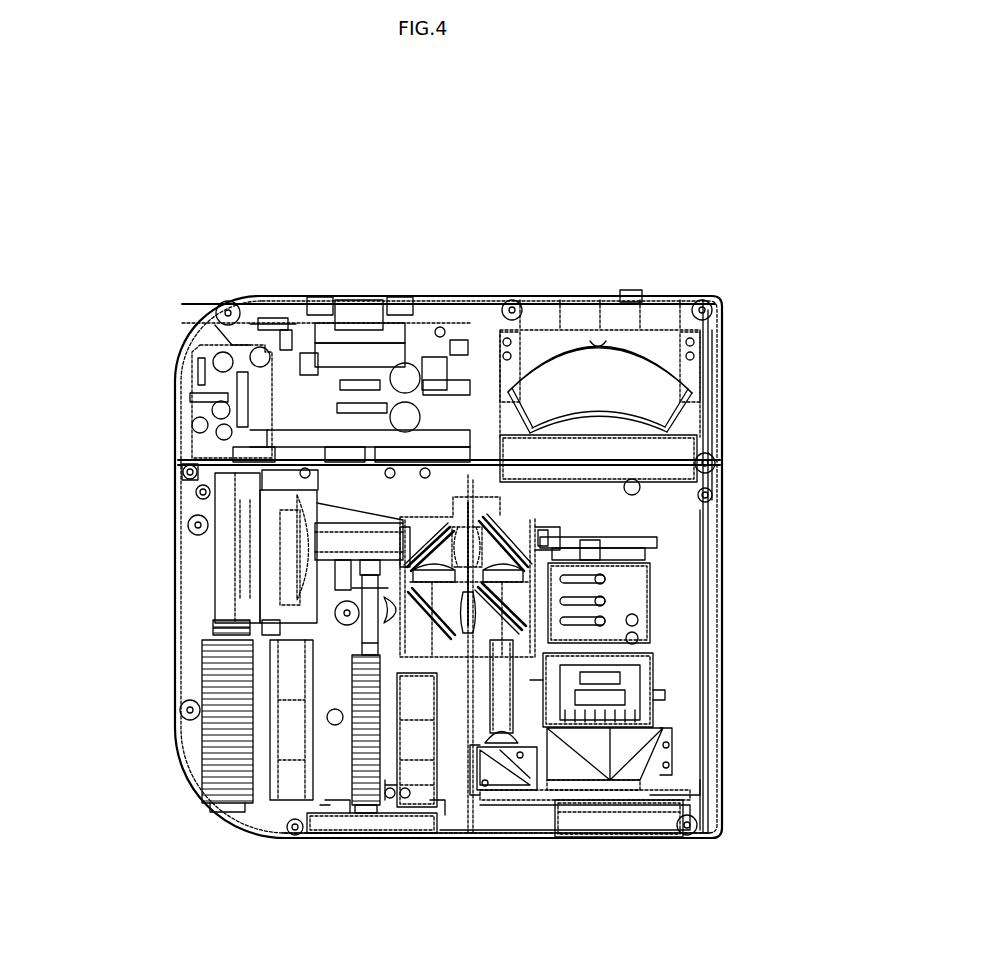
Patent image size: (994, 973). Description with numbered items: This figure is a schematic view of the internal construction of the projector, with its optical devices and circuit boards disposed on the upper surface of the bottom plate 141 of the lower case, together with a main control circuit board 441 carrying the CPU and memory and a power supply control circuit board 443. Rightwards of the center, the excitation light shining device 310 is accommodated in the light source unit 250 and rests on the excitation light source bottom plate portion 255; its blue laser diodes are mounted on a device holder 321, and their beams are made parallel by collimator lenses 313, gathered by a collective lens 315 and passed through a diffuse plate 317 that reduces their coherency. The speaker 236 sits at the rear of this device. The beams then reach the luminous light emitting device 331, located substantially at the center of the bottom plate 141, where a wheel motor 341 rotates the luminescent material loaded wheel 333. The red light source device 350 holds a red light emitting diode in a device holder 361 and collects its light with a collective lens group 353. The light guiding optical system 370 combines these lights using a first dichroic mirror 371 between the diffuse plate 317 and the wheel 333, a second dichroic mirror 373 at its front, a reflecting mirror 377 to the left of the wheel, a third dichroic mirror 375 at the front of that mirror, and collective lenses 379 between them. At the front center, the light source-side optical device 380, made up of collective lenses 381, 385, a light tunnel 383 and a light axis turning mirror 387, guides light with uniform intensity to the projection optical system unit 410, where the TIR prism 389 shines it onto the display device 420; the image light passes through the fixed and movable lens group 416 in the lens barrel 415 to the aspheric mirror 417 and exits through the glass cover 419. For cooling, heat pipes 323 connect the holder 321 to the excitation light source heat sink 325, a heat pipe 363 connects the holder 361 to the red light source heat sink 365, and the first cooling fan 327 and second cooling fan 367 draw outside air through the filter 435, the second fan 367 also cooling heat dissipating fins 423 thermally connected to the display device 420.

The bottom plate 141 is at (195, 580).
The speaker 236 is at (372, 360).
The light source unit 250 is at (280, 325).
The excitation light source bottom plate portion 255 is at (307, 522).
The excitation light shining device 310 is at (199, 380).
The collimator lenses 313 is at (250, 540).
The collective lens 315 is at (195, 453).
The diffuse plate 317 is at (327, 325).
The device holder 321 is at (241, 543).
The heat pipes 323 is at (213, 613).
The excitation light source heat sink 325 is at (287, 668).
The first cooling fan 327 is at (250, 678).
The luminous light emitting device 331 is at (648, 241).
The luminescent material loaded wheel 333 is at (478, 415).
The wheel motor 341 is at (500, 510).
The red light source device 350 is at (135, 836).
The collective lens group 353 is at (375, 612).
The device holder 361 is at (362, 582).
The heat pipe 363 is at (357, 598).
The red light source heat sink 365 is at (380, 625).
The second cooling fan 367 is at (415, 765).
The light guiding optical system 370 is at (561, 582).
The first dichroic mirror 371 is at (432, 540).
The second dichroic mirror 373 is at (433, 622).
The third dichroic mirror 375 is at (577, 623).
The reflecting mirror 377 is at (520, 542).
The collective lenses 379 is at (401, 395).
The light source-side optical device 380 is at (648, 838).
The collective lens 381 is at (593, 670).
The light tunnel 383 is at (587, 773).
The collective lens 385 is at (503, 690).
The light axis turning mirror 387 is at (502, 773).
The TIR prism 389 is at (548, 730).
The projection optical system unit 410 is at (776, 620).
The lens barrel 415 is at (635, 578).
The movable lens group 416 is at (793, 593).
The aspheric mirror 417 is at (643, 392).
The glass cover 419 is at (655, 450).
The display device 420 is at (618, 787).
The heat dissipating fins 423 is at (598, 823).
The filter 435 is at (320, 823).
The main control circuit board 441 is at (207, 308).
The power supply control circuit board 443 is at (263, 325).